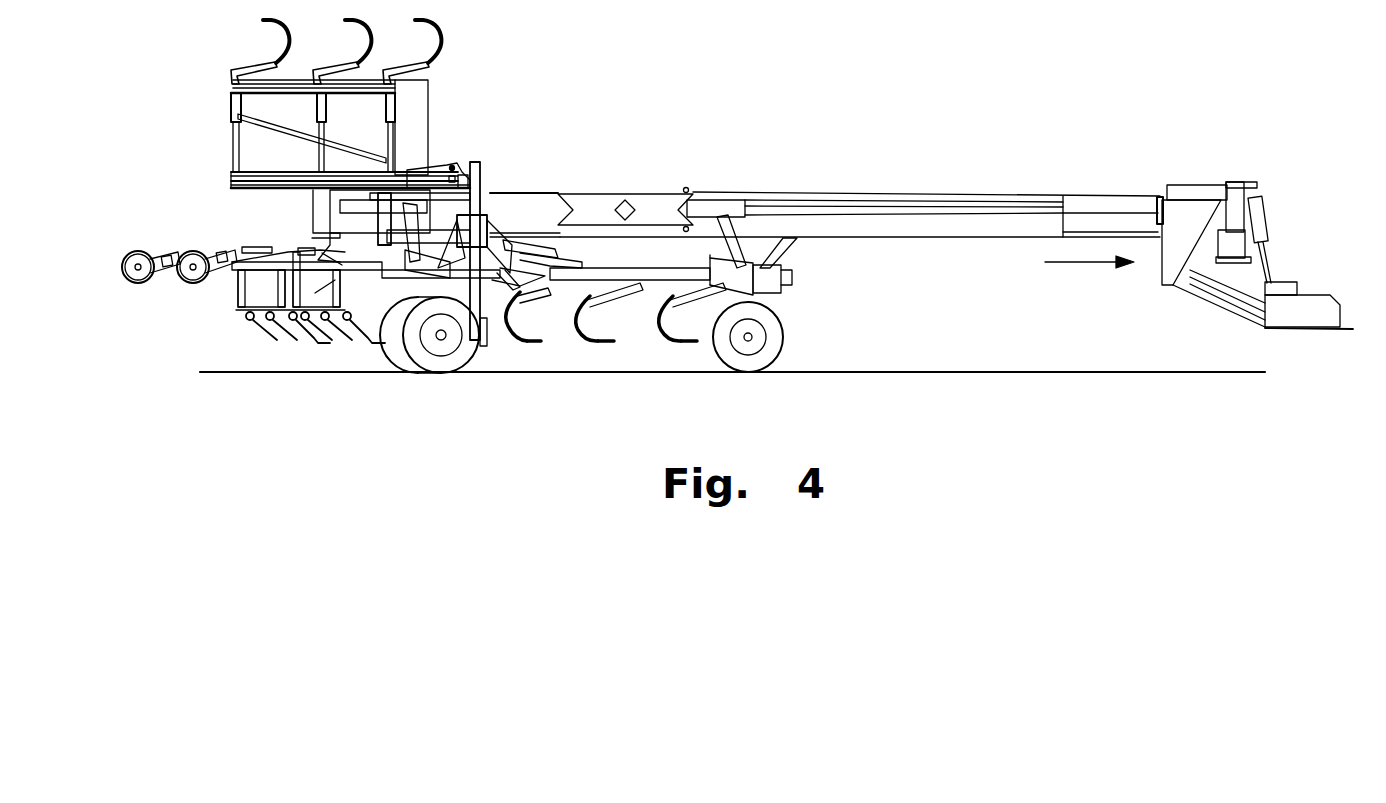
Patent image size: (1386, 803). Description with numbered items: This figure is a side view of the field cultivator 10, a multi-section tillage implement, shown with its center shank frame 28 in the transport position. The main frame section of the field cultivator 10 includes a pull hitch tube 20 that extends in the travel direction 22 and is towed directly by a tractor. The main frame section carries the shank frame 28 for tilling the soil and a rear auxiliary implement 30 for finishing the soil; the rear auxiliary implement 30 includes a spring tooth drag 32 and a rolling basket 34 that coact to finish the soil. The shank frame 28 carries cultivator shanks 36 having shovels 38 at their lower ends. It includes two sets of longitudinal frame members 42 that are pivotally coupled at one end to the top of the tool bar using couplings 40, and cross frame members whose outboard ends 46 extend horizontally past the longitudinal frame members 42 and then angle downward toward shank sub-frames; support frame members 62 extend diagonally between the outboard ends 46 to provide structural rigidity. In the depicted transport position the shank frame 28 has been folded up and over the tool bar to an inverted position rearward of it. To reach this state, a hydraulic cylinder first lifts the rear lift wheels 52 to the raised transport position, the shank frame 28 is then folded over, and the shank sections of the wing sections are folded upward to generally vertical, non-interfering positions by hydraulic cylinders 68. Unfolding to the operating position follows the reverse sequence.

The field cultivator 10 is at (890, 108).
The pull hitch tube 20 is at (919, 236).
The travel direction 22 is at (1095, 266).
The shank frame 28 is at (452, 82).
The rear auxiliary implement 30 is at (258, 358).
The spring tooth drag 32 is at (322, 340).
The rolling basket 34 is at (190, 245).
The cultivator shanks 36 is at (676, 323).
The shovels 38 is at (670, 345).
The couplings 40 is at (445, 163).
The longitudinal frame members 42 is at (272, 186).
The outboard ends 46 is at (232, 141).
The rear lift wheels 52 is at (393, 360).
The support frame members 62 is at (292, 137).
The hydraulic cylinders 68 is at (535, 250).